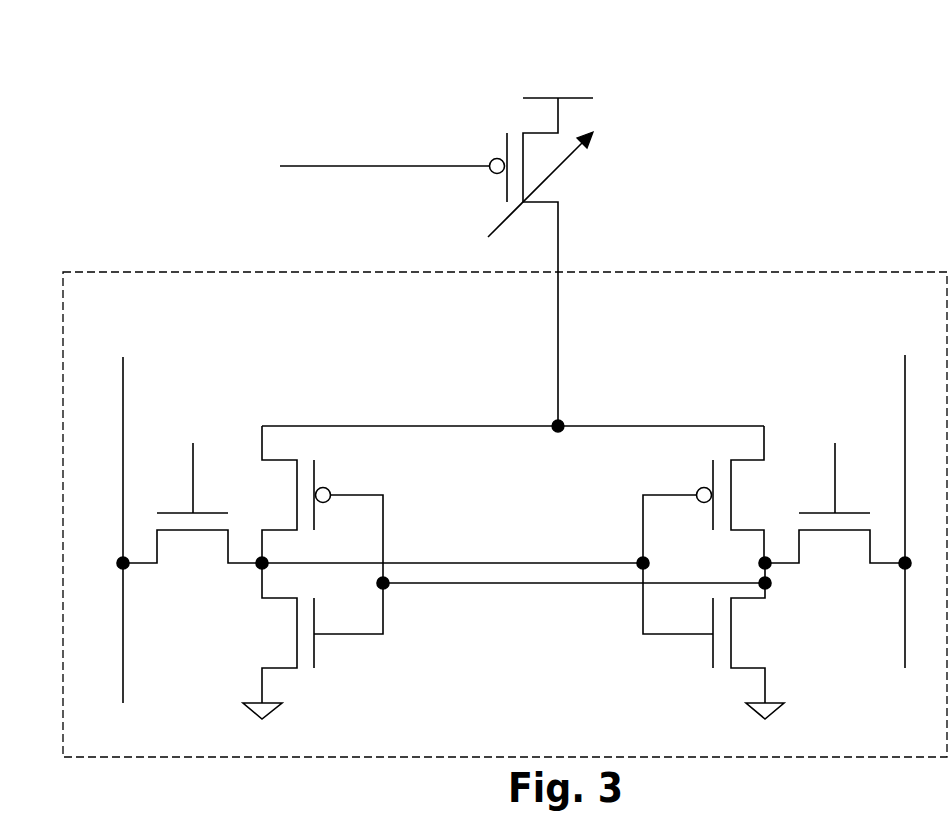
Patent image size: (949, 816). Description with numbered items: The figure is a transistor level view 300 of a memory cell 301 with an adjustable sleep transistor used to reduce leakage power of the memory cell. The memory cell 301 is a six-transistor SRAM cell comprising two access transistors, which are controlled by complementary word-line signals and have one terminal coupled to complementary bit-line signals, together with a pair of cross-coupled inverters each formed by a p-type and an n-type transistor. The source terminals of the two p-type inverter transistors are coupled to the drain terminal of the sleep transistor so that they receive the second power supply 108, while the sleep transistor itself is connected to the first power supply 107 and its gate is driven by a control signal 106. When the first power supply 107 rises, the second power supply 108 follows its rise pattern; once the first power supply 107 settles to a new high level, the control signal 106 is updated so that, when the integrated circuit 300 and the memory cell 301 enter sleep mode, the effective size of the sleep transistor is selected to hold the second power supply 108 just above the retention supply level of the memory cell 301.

The transistor level view 300 is at (85, 85).
The memory cell 301 is at (505, 514).
The control signal 106 is at (383, 167).
The first power supply 107 is at (590, 98).
The second power supply 108 is at (573, 426).